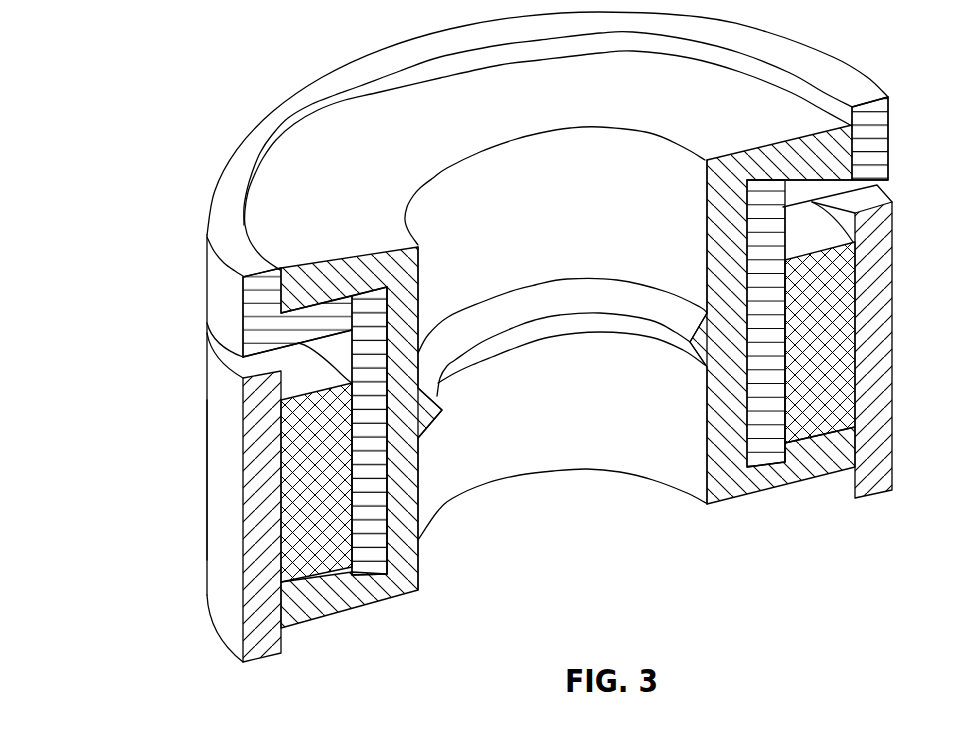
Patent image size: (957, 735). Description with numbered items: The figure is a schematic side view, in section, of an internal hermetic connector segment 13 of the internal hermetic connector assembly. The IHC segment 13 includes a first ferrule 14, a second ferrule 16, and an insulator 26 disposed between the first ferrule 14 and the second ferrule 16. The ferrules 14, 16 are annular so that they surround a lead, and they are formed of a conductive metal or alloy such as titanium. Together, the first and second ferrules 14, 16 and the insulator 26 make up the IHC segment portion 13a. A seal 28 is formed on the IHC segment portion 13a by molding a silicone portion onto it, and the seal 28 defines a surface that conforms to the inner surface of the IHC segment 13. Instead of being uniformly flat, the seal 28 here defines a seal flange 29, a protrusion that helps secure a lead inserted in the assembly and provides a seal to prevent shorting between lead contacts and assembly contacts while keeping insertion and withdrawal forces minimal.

The internal hermetic connector segment 13 is at (113, 42).
The IHC segment portion 13a is at (208, 591).
The first ferrule 14 is at (255, 330).
The second ferrule 16 is at (262, 457).
The insulator 26 is at (300, 545).
The seal 28 is at (420, 592).
The seal flange 29 is at (557, 325).